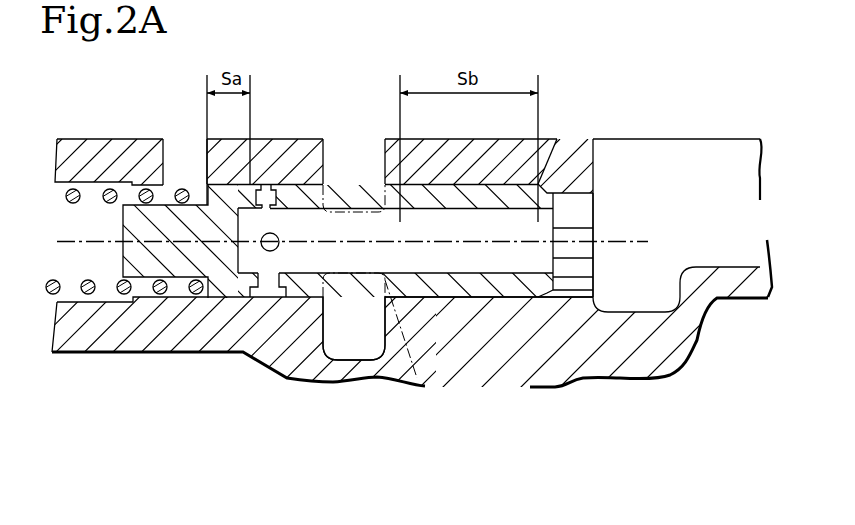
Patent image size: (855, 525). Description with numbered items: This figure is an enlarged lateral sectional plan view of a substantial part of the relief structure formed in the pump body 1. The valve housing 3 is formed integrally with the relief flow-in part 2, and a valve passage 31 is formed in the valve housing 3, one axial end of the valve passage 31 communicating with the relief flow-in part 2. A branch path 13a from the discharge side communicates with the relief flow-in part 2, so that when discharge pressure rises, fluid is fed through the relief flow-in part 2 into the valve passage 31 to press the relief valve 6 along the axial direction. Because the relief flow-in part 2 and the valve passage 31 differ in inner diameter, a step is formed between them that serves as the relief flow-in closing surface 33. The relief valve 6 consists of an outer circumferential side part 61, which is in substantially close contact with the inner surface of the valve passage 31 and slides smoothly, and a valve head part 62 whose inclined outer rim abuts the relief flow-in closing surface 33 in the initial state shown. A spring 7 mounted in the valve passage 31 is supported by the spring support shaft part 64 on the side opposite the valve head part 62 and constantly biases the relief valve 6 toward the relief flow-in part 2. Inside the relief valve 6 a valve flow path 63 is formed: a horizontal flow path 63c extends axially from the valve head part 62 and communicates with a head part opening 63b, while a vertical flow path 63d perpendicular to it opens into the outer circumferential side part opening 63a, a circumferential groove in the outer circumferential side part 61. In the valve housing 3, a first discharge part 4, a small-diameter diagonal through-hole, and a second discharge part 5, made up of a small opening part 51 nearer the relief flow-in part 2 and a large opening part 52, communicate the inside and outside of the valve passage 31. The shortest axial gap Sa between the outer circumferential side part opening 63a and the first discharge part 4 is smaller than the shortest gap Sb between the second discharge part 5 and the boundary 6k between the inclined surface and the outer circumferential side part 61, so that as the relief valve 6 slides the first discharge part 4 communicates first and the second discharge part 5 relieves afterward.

The pump body 1 is at (687, 362).
The relief flow-in part 2 is at (575, 217).
The valve housing 3 is at (571, 134).
The first discharge part 4 is at (180, 157).
The second discharge part 5 is at (354, 166).
The relief valve 6 is at (506, 306).
The boundary 6k is at (538, 184).
The spring 7 is at (93, 290).
The branch path 13a is at (688, 174).
The valve passage 31 is at (175, 290).
The relief flow-in closing surface 33 is at (573, 258).
The small opening part 51 is at (388, 330).
The large opening part 52 is at (335, 338).
The outer circumferential side part 61 is at (448, 183).
The valve head part 62 is at (562, 280).
The valve flow path 63 is at (481, 255).
The outer circumferential side part opening 63a is at (256, 190).
The head part opening 63b is at (595, 228).
The horizontal flow path 63c is at (443, 265).
The vertical flow path 63d is at (278, 238).
The spring support shaft part 64 is at (140, 227).